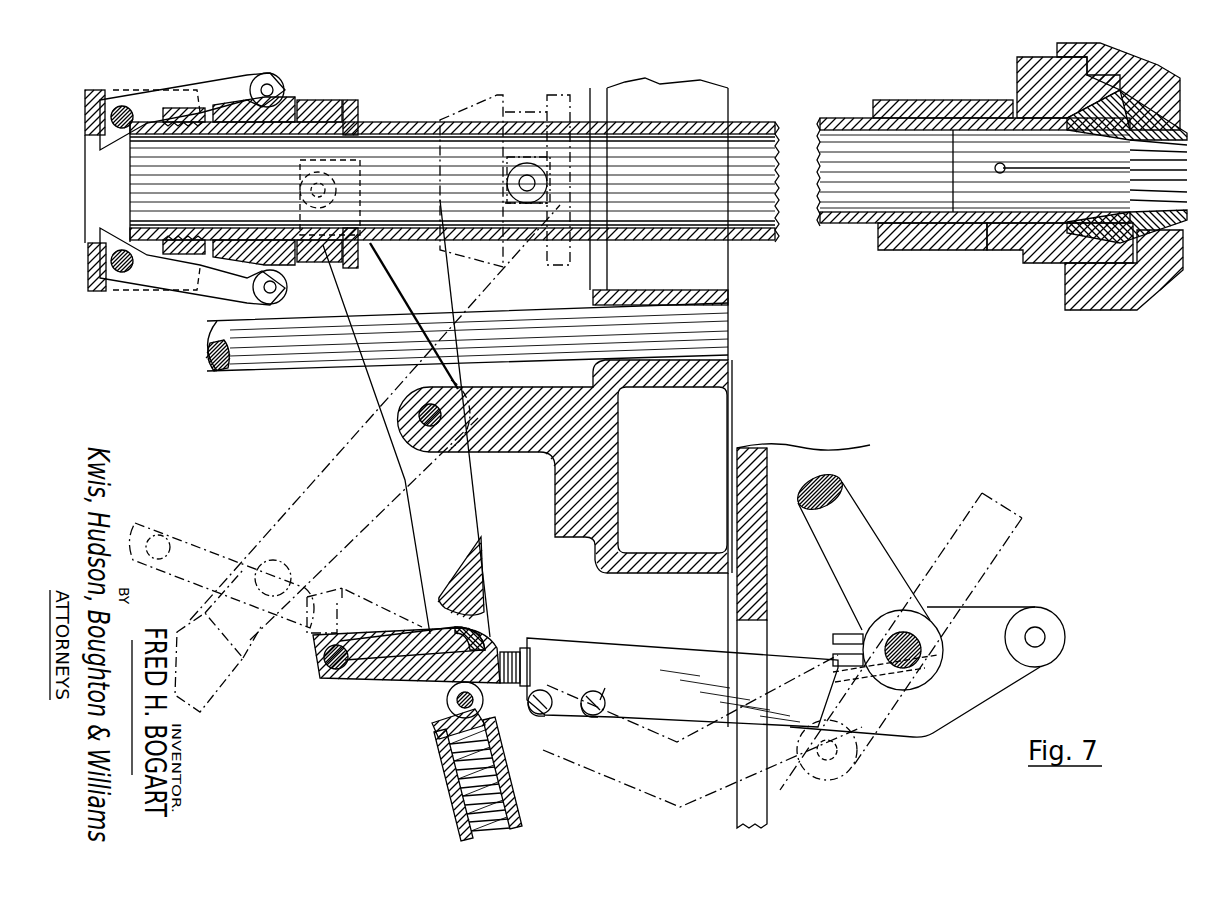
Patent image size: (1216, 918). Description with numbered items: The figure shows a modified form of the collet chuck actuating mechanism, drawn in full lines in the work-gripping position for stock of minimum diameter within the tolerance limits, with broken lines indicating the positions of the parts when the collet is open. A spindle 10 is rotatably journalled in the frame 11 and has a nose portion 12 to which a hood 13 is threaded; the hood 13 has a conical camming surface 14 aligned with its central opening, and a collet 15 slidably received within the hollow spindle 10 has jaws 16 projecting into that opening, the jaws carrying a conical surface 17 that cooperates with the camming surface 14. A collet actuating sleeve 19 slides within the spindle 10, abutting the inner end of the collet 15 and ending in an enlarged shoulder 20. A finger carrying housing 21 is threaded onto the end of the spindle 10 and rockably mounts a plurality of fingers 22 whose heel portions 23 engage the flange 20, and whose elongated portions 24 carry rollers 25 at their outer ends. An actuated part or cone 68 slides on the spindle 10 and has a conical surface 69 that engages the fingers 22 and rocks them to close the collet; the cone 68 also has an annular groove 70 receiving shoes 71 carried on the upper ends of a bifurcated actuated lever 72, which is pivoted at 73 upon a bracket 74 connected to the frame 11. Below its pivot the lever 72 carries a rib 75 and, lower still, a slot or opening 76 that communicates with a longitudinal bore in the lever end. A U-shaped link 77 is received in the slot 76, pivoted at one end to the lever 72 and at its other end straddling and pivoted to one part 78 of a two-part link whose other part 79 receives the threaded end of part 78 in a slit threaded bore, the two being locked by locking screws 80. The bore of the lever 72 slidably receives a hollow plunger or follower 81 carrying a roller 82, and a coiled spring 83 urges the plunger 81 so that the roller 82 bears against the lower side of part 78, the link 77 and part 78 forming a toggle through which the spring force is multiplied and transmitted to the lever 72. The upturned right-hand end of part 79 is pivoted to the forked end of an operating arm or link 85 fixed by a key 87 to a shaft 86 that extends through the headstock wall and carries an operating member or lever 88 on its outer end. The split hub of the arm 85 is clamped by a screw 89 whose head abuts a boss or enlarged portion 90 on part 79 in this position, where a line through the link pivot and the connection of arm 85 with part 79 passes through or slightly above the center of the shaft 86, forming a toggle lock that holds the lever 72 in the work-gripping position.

The spindle 10 is at (736, 124).
The frame 11 is at (737, 612).
The nose portion 12 is at (1017, 68).
The hood 13 is at (1112, 307).
The conical camming surface 14 is at (1182, 118).
The collet 15 is at (1000, 222).
The jaws 16 is at (1176, 193).
The conical surface 17 is at (1178, 226).
The collet actuating sleeve 19 is at (660, 127).
The enlarged shoulder 20 is at (147, 148).
The finger carrying housing 21 is at (90, 258).
The fingers 22 is at (175, 275).
The heel portions 23 is at (122, 240).
The elongated portions 24 is at (222, 290).
The rollers 25 is at (287, 290).
The actuated part or cone 68 is at (286, 106).
The conical surface 69 is at (250, 108).
The annular groove 70 is at (318, 112).
The shoes 71 is at (363, 128).
The actuated lever 72 is at (385, 380).
The pivot 73 is at (419, 415).
The bracket 74 is at (533, 440).
The rib 75 is at (478, 565).
The slot or opening 76 is at (478, 614).
The U-shaped link 77 is at (420, 628).
The part of two-part link 78 is at (342, 636).
The part of two-part link 79 is at (652, 656).
The locking screws 80 is at (593, 716).
The hollow plunger or follower 81 is at (452, 720).
The roller 82 is at (452, 705).
The coiled spring 83 is at (462, 800).
The operating arm or link 85 is at (1016, 616).
The shaft 86 is at (920, 627).
The key 87 is at (925, 645).
The operating member or lever 88 is at (866, 534).
The screw 89 is at (833, 640).
The boss or enlarged portion 90 is at (833, 660).